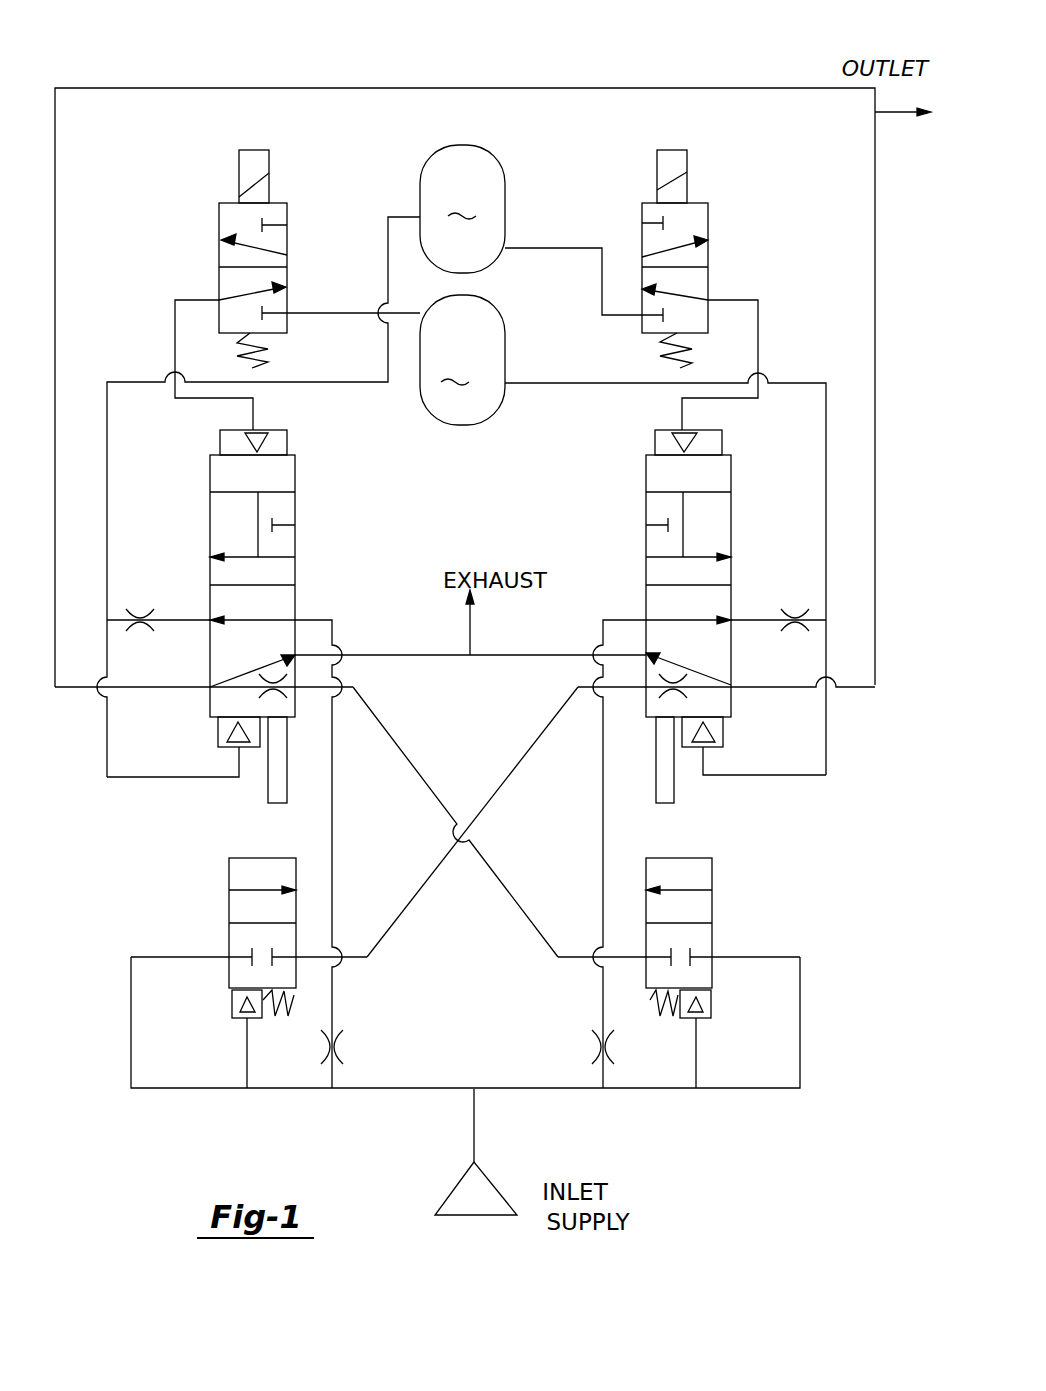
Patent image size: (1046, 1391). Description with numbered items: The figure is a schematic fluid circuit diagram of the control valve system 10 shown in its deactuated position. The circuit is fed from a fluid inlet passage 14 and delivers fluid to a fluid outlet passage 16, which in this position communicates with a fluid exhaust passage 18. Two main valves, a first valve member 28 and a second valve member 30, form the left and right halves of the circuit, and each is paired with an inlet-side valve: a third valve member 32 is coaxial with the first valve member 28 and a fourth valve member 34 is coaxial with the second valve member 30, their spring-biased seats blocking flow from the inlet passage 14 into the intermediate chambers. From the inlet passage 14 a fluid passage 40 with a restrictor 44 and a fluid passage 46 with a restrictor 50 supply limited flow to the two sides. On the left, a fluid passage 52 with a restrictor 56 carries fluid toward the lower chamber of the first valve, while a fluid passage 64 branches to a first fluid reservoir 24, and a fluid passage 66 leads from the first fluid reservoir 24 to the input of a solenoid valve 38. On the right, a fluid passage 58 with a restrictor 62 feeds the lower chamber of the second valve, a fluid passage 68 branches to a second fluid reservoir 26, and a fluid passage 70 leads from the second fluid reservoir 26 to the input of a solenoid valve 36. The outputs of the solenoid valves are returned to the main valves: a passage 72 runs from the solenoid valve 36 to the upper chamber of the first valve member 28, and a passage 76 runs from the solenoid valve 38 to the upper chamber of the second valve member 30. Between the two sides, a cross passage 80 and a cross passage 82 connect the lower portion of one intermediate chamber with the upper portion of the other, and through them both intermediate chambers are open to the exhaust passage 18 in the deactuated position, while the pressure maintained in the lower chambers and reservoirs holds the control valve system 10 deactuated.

The control valve system 10 is at (356, 70).
The fluid inlet passage 14 is at (474, 1133).
The fluid outlet passage 16 is at (902, 117).
The fluid exhaust passage 18 is at (470, 630).
The first fluid reservoir 24 is at (462, 209).
The second fluid reservoir 26 is at (462, 360).
The first valve member 28 is at (210, 525).
The second valve member 30 is at (731, 530).
The third valve member 32 is at (229, 907).
The fourth valve member 34 is at (713, 900).
The solenoid valve 36 is at (219, 220).
The solenoid valve 38 is at (708, 218).
The fluid passage 40 is at (332, 992).
The restrictor 44 is at (340, 1040).
The fluid passage 46 is at (602, 992).
The restrictor 50 is at (597, 1048).
The fluid passage 52 is at (165, 775).
The restrictor 56 is at (143, 627).
The fluid passage 58 is at (785, 775).
The restrictor 62 is at (797, 627).
The fluid passage 64 is at (107, 457).
The fluid passage 66 is at (563, 248).
The fluid passage 68 is at (826, 472).
The fluid passage 70 is at (346, 313).
The passage 72 is at (175, 325).
The passage 76 is at (760, 330).
The cross passage 80 is at (523, 763).
The cross passage 82 is at (407, 747).